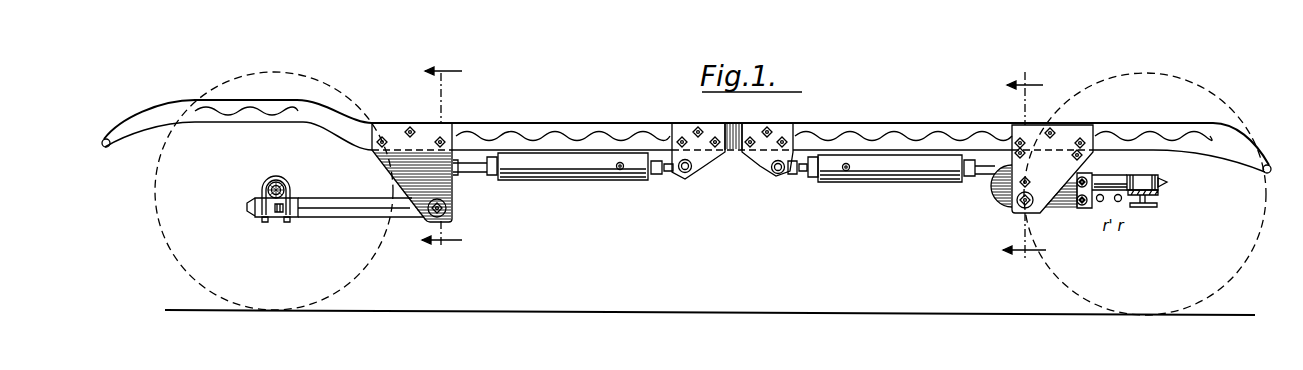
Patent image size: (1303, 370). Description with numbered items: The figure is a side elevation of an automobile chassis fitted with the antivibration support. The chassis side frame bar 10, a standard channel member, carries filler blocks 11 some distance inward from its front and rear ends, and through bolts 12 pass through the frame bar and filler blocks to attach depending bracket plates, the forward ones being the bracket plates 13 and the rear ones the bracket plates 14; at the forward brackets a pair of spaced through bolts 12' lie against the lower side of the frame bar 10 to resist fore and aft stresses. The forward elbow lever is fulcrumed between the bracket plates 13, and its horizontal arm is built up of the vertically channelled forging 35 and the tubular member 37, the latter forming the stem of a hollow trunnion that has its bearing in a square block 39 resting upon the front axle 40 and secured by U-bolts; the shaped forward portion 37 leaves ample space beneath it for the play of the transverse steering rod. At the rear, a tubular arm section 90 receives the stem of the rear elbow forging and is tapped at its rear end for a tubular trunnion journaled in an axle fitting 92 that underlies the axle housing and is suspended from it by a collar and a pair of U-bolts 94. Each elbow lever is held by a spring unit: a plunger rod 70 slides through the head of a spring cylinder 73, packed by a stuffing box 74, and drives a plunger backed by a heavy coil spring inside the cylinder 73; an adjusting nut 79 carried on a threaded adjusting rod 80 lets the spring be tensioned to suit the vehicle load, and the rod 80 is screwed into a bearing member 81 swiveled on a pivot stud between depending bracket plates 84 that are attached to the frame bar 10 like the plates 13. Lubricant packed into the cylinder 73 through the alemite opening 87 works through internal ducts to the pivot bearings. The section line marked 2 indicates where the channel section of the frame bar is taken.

The section line 2- 2 is at (1024, 166).
The chassis side frame bar 10 is at (890, 130).
The filler blocks 11 is at (452, 63).
The through bolts 12 is at (751, 149).
The spaced through bolts 12' is at (1029, 145).
The forward bracket plates 13 is at (1048, 193).
The rear bracket plates 14 is at (400, 184).
The vertically channelled forging 35 is at (1088, 210).
The tubular member 37 is at (1108, 178).
The square block 39 is at (1145, 178).
The front axle 40 is at (1142, 207).
The plunger rod 70 is at (467, 173).
The spring cylinder 73 is at (567, 181).
The stuffing box 74 is at (489, 176).
The adjusting nut 79 is at (813, 178).
The threaded adjusting rod 80 is at (658, 176).
The bearing member 81 is at (680, 178).
The depending bracket plates 84 is at (752, 157).
The alemite opening 87 is at (619, 170).
The tubular arm section 90 is at (355, 218).
The axle fitting 92 is at (276, 214).
The U-bolts 94 is at (284, 177).